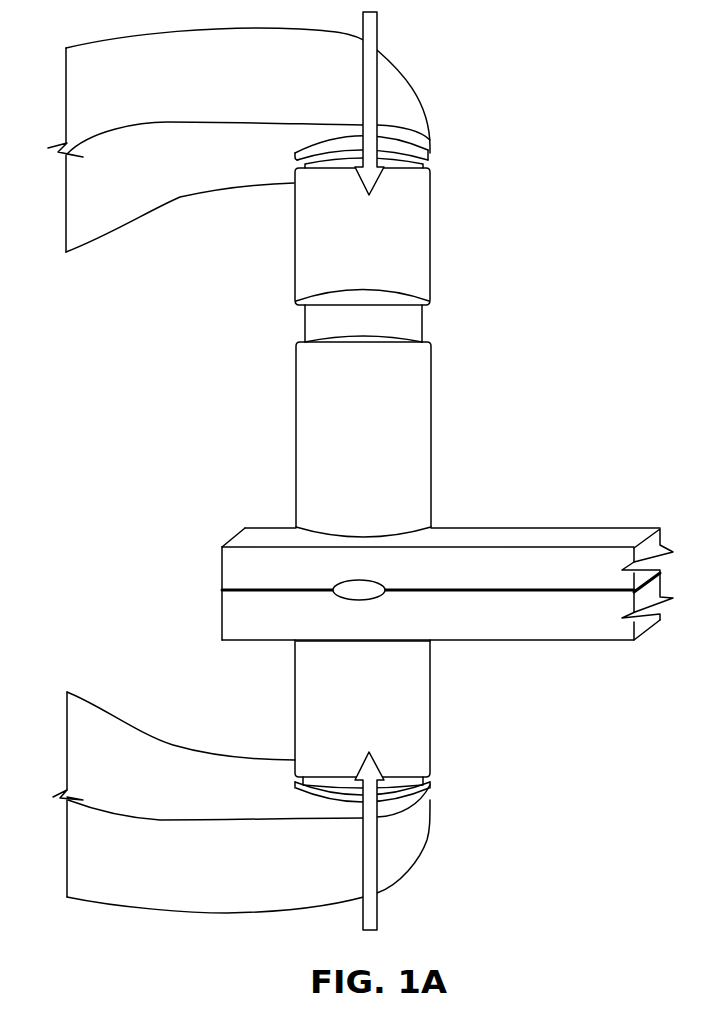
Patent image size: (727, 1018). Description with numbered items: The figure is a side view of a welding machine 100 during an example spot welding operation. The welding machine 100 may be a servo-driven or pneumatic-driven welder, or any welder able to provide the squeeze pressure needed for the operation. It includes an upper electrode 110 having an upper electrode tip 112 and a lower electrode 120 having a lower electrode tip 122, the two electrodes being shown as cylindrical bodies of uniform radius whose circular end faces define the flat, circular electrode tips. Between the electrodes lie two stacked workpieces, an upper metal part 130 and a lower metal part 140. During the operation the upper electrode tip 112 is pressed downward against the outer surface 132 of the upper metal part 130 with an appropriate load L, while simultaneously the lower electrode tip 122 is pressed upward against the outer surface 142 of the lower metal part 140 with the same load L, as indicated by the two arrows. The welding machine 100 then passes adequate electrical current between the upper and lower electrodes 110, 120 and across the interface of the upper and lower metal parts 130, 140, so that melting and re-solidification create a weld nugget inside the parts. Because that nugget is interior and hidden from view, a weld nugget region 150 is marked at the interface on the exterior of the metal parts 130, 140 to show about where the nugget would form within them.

The welding machine 100 is at (430, 813).
The upper electrode 110 is at (418, 387).
The upper electrode tip 112 is at (321, 524).
The lower electrode 120 is at (425, 707).
The lower electrode tip 122 is at (337, 648).
The upper metal part 130 is at (447, 555).
The outer surface of the upper metal part 132 is at (602, 545).
The lower metal part 140 is at (450, 649).
The outer surface of the lower metal part 142 is at (615, 640).
The weld nugget region 150 is at (383, 585).
The load L is at (375, 33).